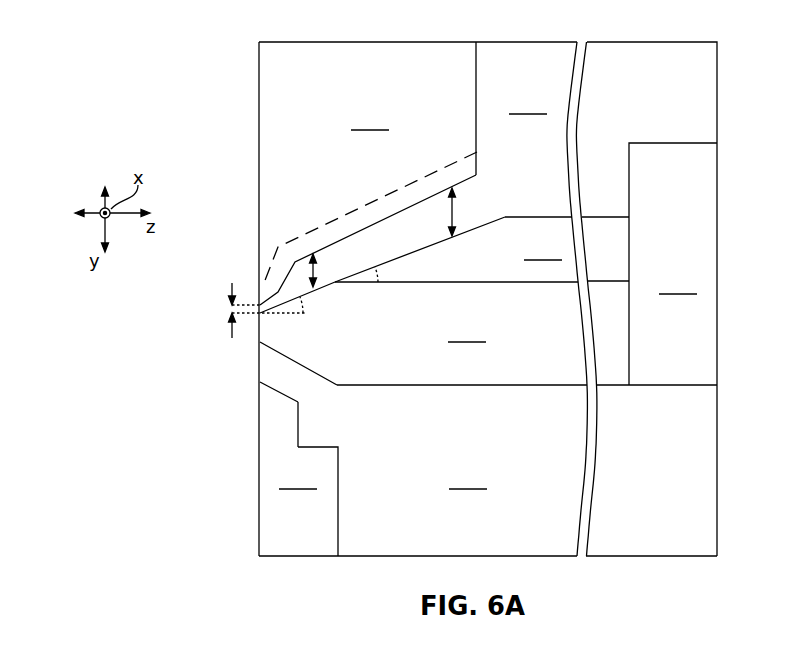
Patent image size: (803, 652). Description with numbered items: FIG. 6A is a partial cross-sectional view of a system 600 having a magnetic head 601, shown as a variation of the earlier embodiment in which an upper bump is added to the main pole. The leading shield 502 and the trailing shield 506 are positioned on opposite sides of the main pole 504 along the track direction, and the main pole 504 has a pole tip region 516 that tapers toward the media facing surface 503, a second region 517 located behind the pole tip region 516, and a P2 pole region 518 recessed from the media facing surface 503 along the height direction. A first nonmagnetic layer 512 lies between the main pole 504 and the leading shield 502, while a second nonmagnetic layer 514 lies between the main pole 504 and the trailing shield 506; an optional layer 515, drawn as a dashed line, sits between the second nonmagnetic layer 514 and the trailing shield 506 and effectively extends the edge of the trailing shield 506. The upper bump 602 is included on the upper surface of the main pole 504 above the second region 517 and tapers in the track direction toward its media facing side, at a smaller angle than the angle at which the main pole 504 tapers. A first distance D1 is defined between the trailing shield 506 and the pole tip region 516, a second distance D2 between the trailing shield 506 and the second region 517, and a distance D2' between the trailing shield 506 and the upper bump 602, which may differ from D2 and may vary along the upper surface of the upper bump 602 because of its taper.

The system 600 is at (95, 95).
The magnetic head 601 is at (132, 333).
The media facing surface 503 is at (256, 522).
The trailing shield 506 is at (418, 108).
The optional layer 515 is at (325, 224).
The second nonmagnetic layer 514 is at (538, 155).
The upper bump 602 is at (576, 249).
The P2 pole region 518 is at (652, 299).
The second region 517 is at (461, 333).
The pole tip region 516 is at (268, 344).
The main pole 504 is at (337, 403).
The leading shield 502 is at (298, 501).
The first nonmagnetic layer 512 is at (527, 512).
The first distance D1 is at (253, 310).
The second distance D2 is at (263, 264).
The distance between the trailing shield and the upper bump D2' is at (475, 222).